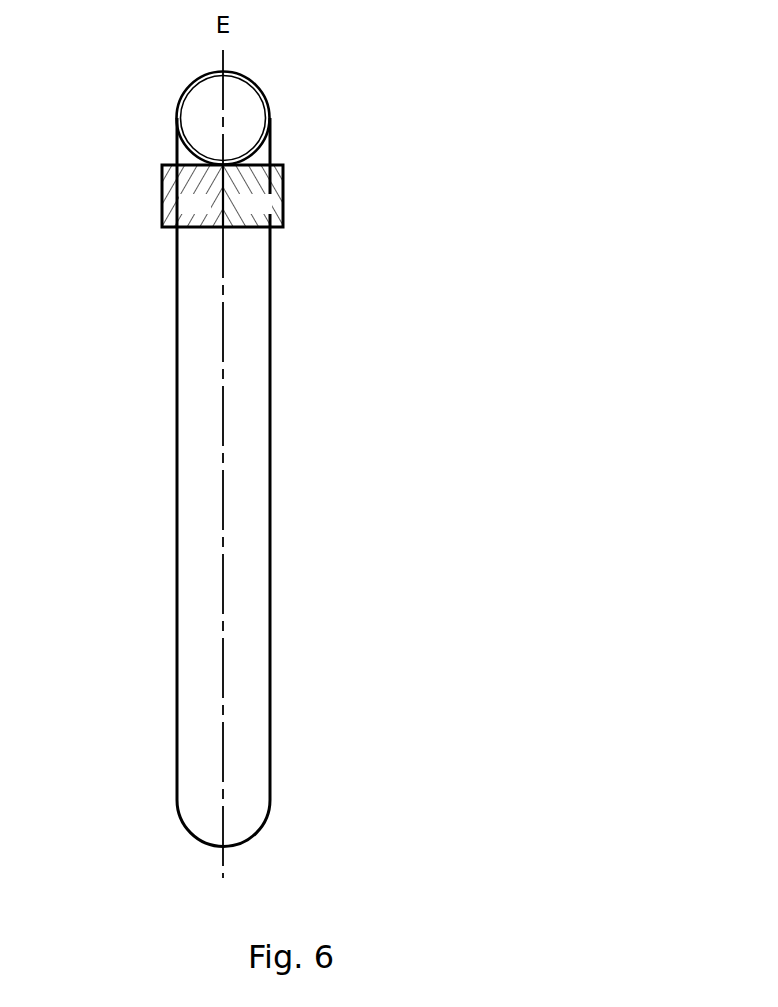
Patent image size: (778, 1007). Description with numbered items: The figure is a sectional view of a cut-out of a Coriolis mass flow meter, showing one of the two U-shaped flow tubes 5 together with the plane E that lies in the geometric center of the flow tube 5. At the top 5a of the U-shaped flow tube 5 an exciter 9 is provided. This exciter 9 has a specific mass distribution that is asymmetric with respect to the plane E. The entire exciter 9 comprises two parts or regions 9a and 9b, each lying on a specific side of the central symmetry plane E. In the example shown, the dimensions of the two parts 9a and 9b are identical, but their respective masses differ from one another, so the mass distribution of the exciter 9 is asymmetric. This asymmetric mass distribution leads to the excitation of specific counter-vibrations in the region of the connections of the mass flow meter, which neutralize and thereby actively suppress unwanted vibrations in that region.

The U-shaped flow tube 5 is at (275, 432).
The top of the U-shaped flow tube 5a is at (270, 105).
The exciter 9 is at (253, 176).
The first exciter part 9a is at (190, 182).
The second exciter part 9b is at (265, 182).